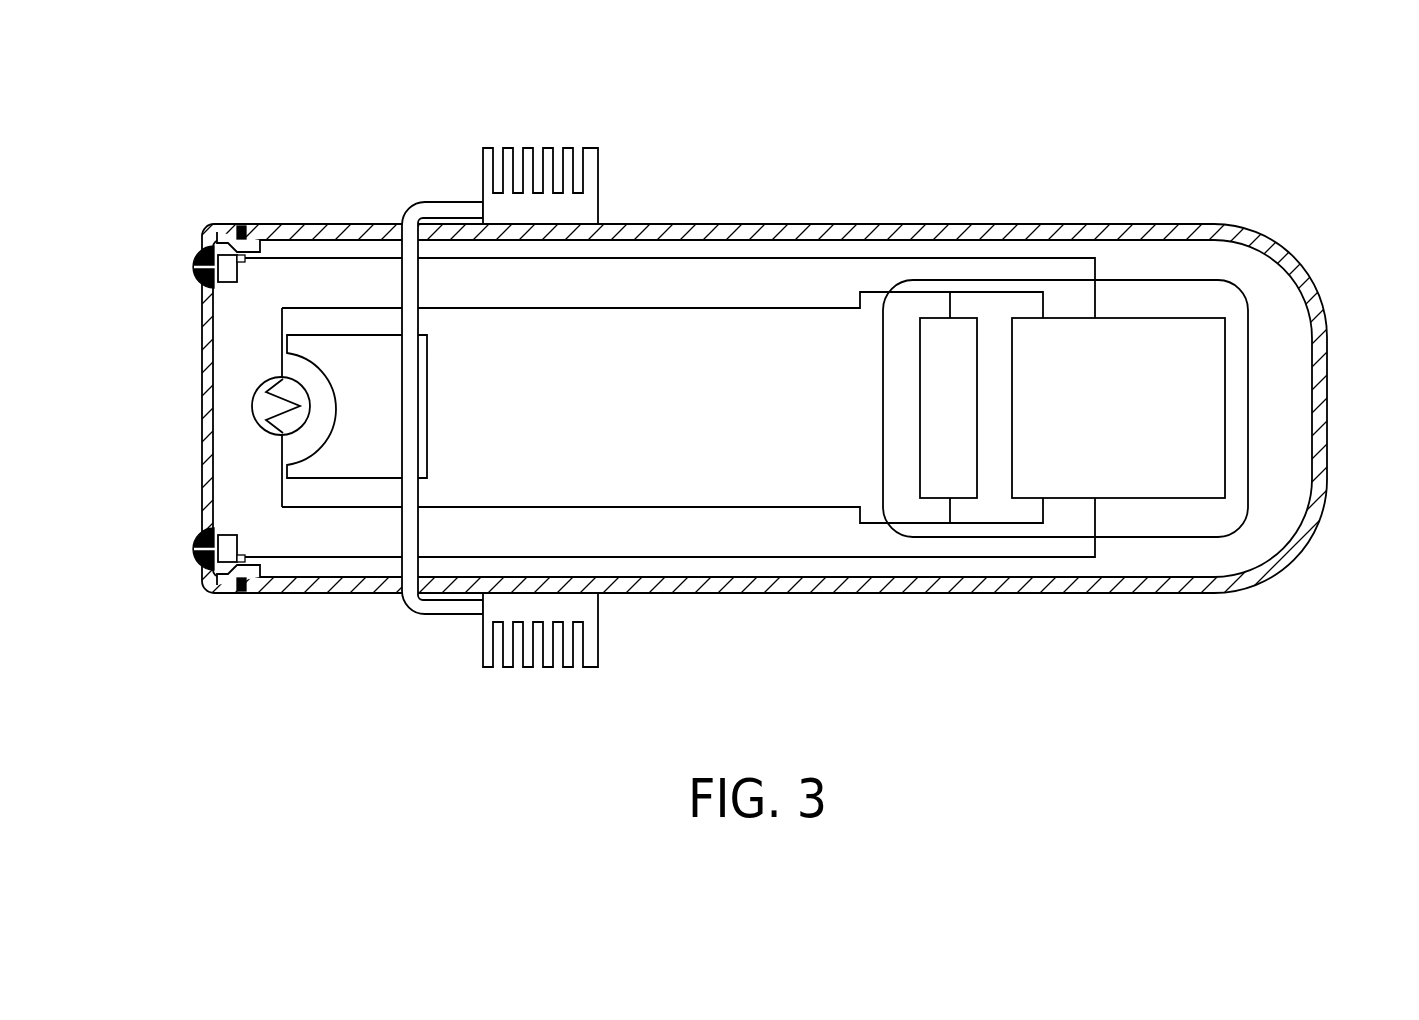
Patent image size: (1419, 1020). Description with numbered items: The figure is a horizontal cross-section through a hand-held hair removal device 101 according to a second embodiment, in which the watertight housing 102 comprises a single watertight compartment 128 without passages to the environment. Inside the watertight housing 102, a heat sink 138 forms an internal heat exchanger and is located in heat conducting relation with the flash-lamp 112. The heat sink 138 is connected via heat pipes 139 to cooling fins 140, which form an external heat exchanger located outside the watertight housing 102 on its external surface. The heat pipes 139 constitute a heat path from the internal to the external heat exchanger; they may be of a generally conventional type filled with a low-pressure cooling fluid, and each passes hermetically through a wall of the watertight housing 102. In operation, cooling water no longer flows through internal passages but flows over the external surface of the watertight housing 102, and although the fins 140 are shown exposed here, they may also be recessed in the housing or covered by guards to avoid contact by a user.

The hand-held hair removal device 101 is at (1326, 194).
The watertight housing 102 is at (1103, 234).
The flash-lamp 112 is at (262, 404).
The watertight compartment 128 is at (722, 358).
The heat sink 138 is at (346, 352).
The heat pipes 139 is at (440, 606).
The cooling fins 140 is at (598, 170).